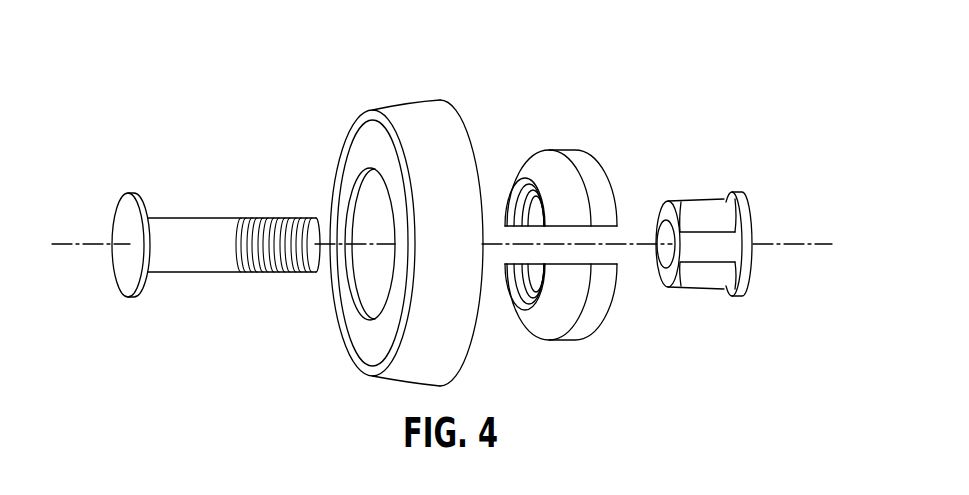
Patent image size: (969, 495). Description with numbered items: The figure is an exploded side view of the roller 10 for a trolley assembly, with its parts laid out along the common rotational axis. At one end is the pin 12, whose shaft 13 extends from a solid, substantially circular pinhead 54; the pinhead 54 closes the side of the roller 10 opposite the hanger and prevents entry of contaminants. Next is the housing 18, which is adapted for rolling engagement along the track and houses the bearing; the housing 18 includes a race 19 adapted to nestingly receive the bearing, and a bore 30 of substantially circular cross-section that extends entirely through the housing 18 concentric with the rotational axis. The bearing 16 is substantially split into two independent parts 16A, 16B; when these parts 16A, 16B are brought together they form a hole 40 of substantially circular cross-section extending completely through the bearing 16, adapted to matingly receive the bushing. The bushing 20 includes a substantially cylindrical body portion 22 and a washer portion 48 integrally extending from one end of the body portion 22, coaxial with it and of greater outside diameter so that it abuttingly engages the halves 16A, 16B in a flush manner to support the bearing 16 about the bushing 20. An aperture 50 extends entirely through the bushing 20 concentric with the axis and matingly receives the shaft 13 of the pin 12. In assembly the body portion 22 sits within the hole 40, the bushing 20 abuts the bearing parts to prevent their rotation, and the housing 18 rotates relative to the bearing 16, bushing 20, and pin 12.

The roller 10 is at (263, 92).
The pin 12 is at (212, 212).
The shaft 13 is at (203, 272).
The pinhead 54 is at (130, 192).
The housing 18 is at (395, 98).
The race 19 is at (368, 198).
The bore 30 is at (370, 302).
The bearing 16 is at (550, 133).
The first part of the split bearing 16A is at (570, 150).
The second part of the split bearing 16B is at (547, 342).
The hole 40 is at (518, 215).
The bushing 20 is at (694, 195).
The body portion 22 is at (696, 289).
The washer portion 48 is at (757, 212).
The aperture 50 is at (662, 243).